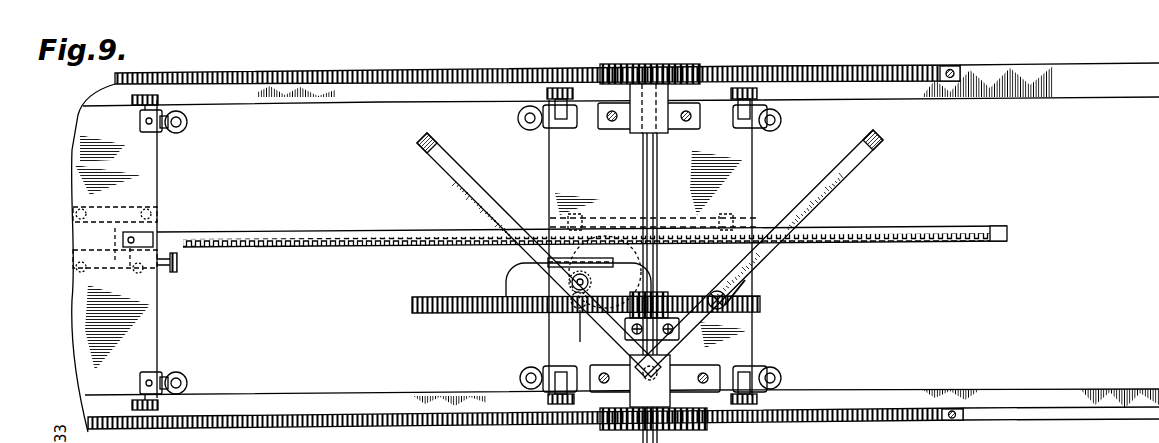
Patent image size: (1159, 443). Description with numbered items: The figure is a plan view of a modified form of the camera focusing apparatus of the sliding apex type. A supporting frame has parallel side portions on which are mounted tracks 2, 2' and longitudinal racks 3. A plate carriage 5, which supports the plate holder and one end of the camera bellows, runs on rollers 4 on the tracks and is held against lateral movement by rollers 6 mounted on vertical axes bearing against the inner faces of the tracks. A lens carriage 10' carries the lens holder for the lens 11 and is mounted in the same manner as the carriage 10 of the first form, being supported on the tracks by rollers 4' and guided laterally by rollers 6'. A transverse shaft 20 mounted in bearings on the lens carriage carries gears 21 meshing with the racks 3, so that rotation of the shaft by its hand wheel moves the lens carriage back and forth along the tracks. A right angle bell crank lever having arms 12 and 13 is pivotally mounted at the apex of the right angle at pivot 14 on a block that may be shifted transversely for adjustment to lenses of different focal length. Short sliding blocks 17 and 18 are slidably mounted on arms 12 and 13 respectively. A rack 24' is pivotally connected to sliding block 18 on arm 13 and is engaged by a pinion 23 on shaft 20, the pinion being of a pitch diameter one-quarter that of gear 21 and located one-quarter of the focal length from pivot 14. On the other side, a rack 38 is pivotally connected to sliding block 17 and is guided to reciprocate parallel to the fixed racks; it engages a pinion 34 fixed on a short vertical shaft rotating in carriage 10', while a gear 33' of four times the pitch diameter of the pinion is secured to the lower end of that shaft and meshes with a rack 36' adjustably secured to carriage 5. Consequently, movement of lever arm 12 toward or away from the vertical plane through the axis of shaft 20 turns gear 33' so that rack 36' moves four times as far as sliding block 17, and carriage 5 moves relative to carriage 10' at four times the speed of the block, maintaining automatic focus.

The track 2 is at (621, 100).
The track 2' is at (622, 416).
The longitudinal rack 3 is at (381, 66).
The roller 4 is at (167, 229).
The roller 4' is at (697, 222).
The carriage 5 is at (152, 310).
The roller 6 is at (341, 250).
The lateral roller 6' is at (650, 248).
The carriage 10 is at (792, 42).
The carriage 10' is at (669, 248).
The lens 11 is at (453, 258).
The lever arm 12 is at (447, 171).
The lever arm 13 is at (812, 213).
The pivot 14 is at (627, 383).
The sliding block 17 is at (588, 335).
The sliding block 18 is at (718, 300).
The transverse shaft 20 is at (643, 155).
The gear 21 is at (613, 69).
The pinion 23 is at (659, 296).
The rack 24' is at (586, 320).
The gear 33' is at (617, 272).
The pinion 34 is at (592, 282).
The rack 36' is at (582, 224).
The rack 38 is at (512, 270).